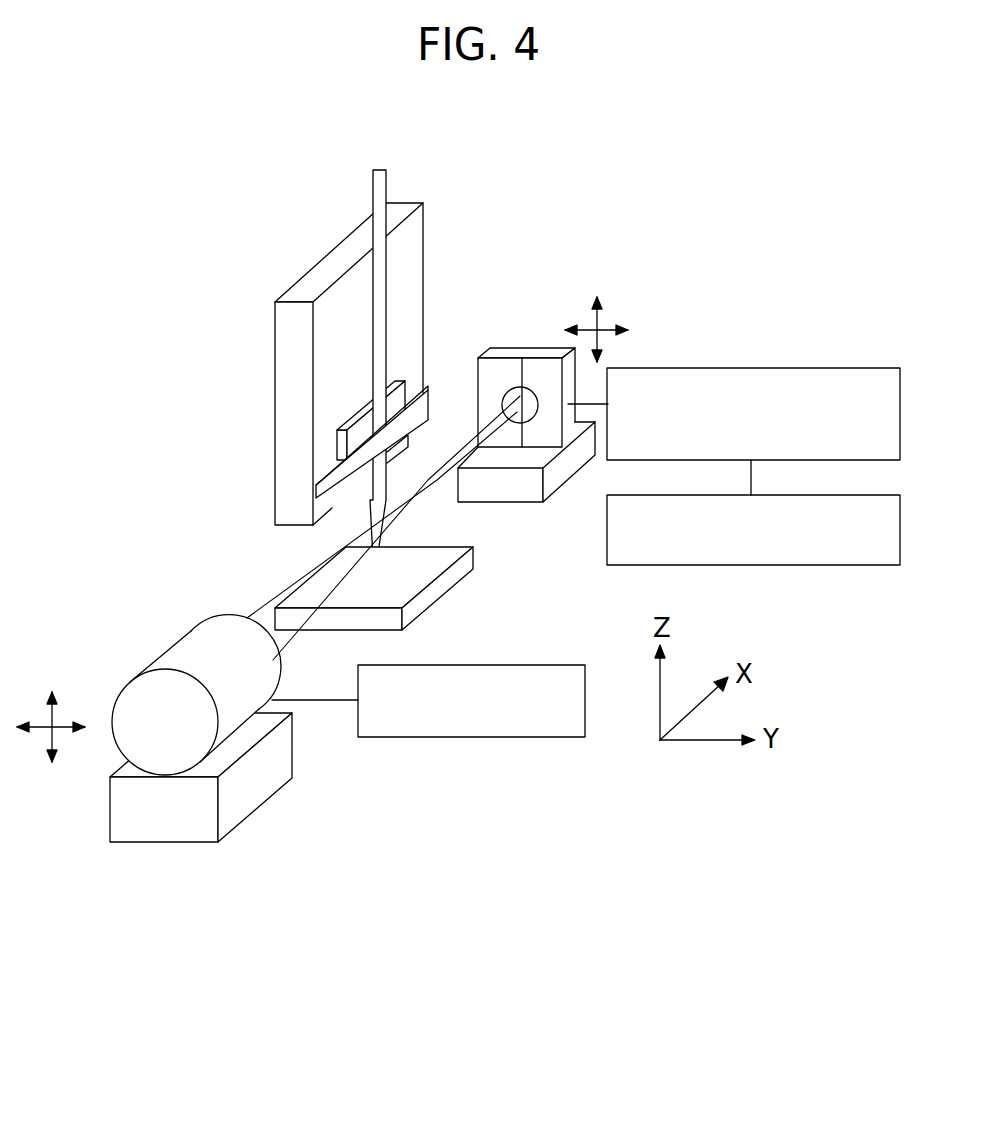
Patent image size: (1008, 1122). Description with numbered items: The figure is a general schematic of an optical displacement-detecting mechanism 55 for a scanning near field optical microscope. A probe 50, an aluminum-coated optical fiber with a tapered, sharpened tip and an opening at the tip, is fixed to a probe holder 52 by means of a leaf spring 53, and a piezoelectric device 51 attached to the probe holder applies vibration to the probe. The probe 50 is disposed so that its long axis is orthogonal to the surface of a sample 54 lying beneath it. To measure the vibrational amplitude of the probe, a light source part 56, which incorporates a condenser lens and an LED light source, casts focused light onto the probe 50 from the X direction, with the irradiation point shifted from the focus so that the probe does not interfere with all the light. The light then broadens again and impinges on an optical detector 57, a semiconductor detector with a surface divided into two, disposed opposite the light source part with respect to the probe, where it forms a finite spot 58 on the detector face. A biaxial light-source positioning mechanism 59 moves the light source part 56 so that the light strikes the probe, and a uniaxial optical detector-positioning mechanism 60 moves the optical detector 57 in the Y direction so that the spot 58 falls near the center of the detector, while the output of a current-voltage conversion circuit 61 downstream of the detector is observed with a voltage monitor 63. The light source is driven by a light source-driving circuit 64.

The probe 50 is at (370, 505).
The piezoelectric device 51 is at (353, 421).
The probe holder 52 is at (292, 343).
The leaf spring 53 is at (323, 493).
The sample 54 is at (408, 580).
The optical displacement-detecting mechanism 55 is at (168, 597).
The light source part 56 is at (183, 647).
The optical detector 57 is at (492, 372).
The spot 58 is at (522, 403).
The biaxial light-source positioning mechanism 59 is at (160, 832).
The uniaxial optical detector-positioning mechanism 60 is at (510, 483).
The current-voltage conversion circuit 61 is at (845, 375).
The voltage monitor 63 is at (818, 555).
The light source-driving circuit 64 is at (573, 730).